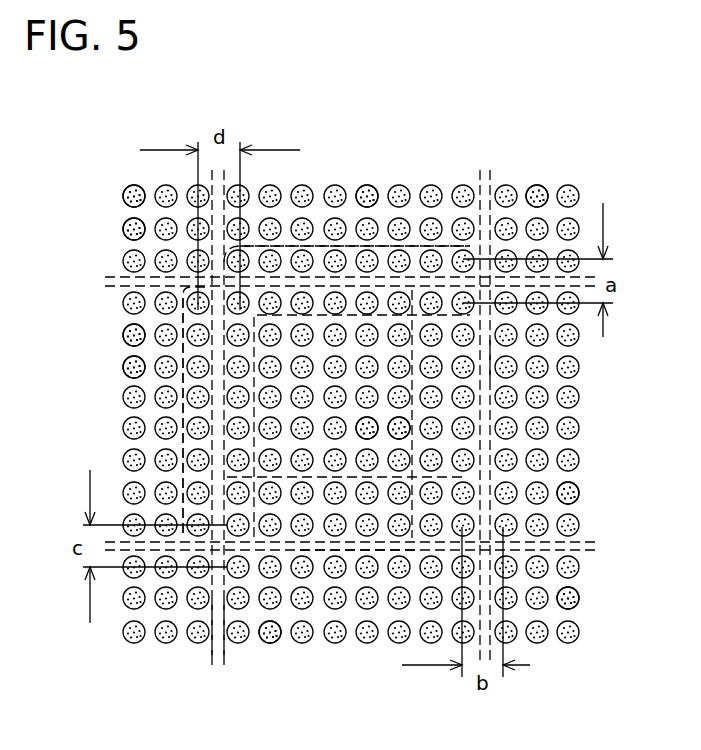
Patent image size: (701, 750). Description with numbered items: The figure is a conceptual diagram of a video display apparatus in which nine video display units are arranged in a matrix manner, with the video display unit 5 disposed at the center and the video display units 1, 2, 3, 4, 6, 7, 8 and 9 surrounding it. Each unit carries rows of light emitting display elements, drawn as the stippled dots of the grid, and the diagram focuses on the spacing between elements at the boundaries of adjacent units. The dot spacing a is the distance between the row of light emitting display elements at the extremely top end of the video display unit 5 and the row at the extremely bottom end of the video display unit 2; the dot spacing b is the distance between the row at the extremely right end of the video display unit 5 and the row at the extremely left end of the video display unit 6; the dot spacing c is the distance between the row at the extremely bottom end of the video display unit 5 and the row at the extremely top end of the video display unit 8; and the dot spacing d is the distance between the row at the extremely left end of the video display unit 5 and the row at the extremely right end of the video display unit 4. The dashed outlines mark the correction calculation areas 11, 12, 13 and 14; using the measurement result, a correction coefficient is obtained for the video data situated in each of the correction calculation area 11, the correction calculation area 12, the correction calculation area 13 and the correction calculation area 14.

The video display unit 1 is at (122, 211).
The video display unit 2 is at (380, 180).
The video display unit 3 is at (546, 180).
The video display unit 4 is at (122, 352).
The video display unit 5 is at (378, 441).
The video display unit 6 is at (580, 491).
The video display unit 7 is at (182, 643).
The video display unit 8 is at (285, 643).
The video display unit 9 is at (578, 584).
The correction calculation area 11 is at (320, 246).
The correction calculation area 12 is at (487, 352).
The correction calculation area 13 is at (355, 553).
The correction calculation area 14 is at (181, 412).